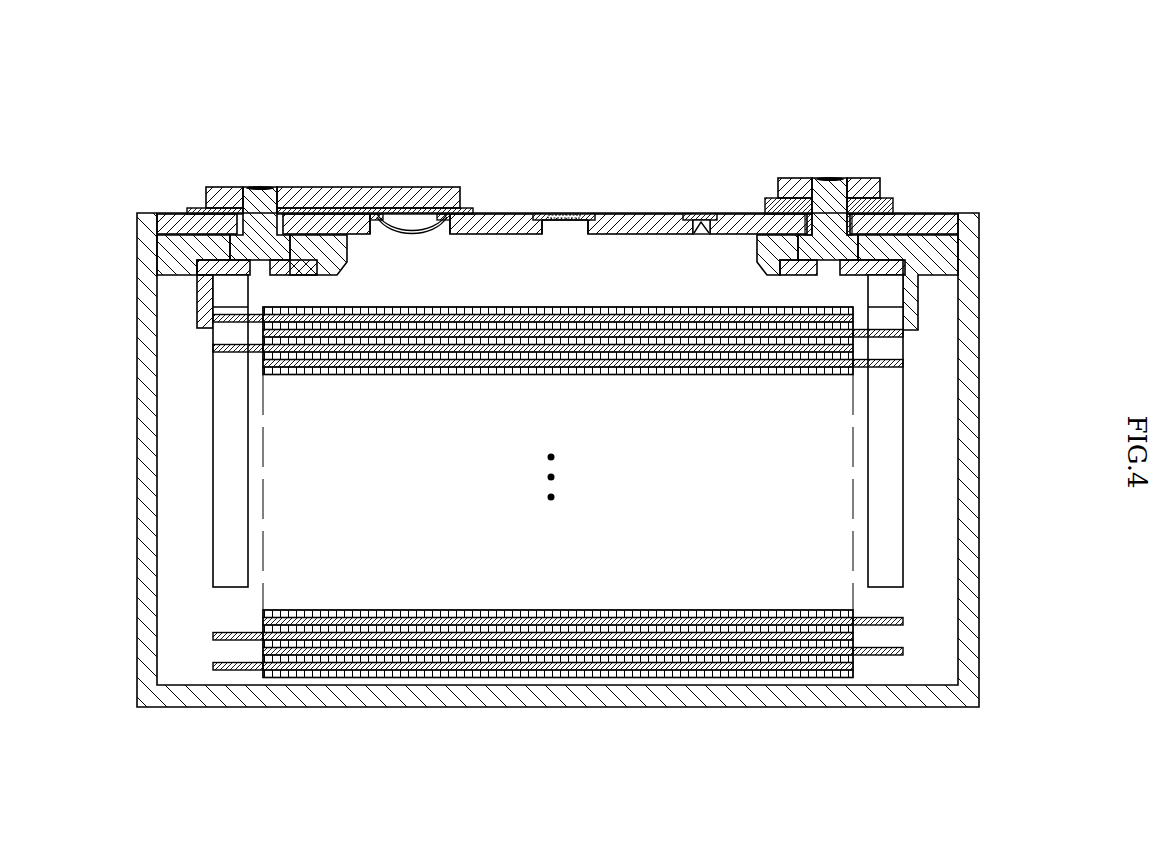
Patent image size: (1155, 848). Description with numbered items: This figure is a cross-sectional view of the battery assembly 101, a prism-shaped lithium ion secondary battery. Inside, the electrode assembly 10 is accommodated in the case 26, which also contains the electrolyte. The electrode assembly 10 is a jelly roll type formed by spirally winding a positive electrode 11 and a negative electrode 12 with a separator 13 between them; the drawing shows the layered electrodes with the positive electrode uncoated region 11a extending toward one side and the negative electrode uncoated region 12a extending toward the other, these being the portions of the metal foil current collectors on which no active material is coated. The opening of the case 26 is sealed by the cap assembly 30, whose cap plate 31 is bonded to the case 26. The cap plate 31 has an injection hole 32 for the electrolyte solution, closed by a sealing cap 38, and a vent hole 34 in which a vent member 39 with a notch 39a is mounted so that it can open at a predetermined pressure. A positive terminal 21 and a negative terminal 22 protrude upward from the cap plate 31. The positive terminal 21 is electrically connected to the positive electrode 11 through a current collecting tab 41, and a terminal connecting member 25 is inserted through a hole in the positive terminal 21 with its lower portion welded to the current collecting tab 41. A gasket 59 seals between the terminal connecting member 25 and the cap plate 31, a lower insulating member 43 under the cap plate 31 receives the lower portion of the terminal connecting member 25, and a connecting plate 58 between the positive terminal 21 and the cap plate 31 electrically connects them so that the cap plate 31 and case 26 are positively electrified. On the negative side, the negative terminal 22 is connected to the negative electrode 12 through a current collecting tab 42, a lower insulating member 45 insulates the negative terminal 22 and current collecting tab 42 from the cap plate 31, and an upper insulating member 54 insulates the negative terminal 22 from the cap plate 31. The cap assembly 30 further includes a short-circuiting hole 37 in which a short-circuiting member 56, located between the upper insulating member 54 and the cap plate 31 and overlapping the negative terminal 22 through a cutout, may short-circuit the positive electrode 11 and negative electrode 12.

The battery assembly 101 is at (603, 82).
The electrode assembly 10 is at (657, 682).
The positive electrode 11 is at (757, 655).
The positive electrode uncoated region 11a is at (883, 655).
The negative electrode 12 is at (357, 660).
The negative electrode uncoated region 12a is at (228, 670).
The separator 13 is at (563, 645).
The positive terminal 21 is at (862, 188).
The negative terminal 22 is at (222, 192).
The terminal connecting member 25 is at (263, 188).
The case 26 is at (972, 495).
The cap assembly 30 is at (566, 172).
The cap plate 31 is at (938, 216).
The injection hole 32 is at (700, 236).
The vent hole 34 is at (565, 236).
The short-circuiting hole 37 is at (387, 217).
The sealing cap 38 is at (700, 214).
The vent member 39 is at (592, 214).
The notch 39a is at (562, 214).
The current collecting tab 41 is at (890, 347).
The current collecting tab 42 is at (225, 407).
The lower insulating member 43 is at (940, 253).
The lower insulating member 45 is at (175, 254).
The upper insulating member 54 is at (327, 200).
The short-circuiting member 56 is at (415, 224).
The connecting plate 58 is at (890, 207).
The gasket 59 is at (802, 228).